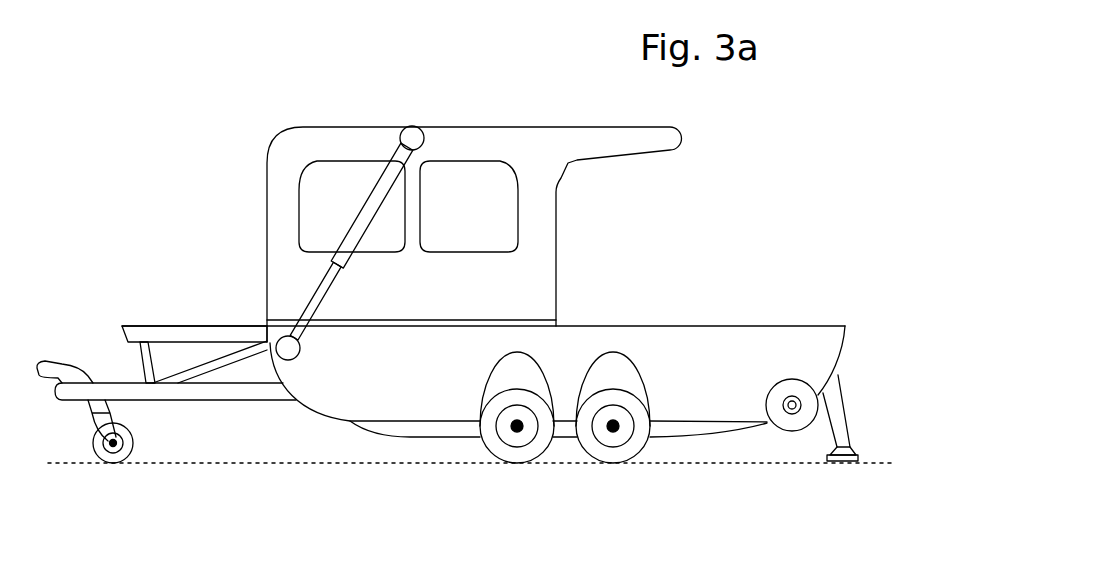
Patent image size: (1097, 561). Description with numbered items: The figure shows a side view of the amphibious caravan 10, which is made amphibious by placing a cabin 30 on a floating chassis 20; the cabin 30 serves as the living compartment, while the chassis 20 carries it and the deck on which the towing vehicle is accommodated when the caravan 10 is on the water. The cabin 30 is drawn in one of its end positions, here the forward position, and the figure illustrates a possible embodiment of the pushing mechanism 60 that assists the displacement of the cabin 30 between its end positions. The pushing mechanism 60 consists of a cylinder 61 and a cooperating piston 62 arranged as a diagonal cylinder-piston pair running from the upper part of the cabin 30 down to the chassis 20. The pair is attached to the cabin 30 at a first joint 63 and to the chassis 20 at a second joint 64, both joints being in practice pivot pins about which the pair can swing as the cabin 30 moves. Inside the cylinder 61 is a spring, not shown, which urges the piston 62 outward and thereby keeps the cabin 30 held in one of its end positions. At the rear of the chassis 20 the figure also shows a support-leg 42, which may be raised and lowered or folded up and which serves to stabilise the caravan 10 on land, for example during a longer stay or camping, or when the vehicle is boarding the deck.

The caravan 10 is at (662, 265).
The chassis 20 is at (483, 394).
The cabin 30 is at (474, 234).
The support-leg 42 is at (836, 418).
The pushing mechanism 60 is at (430, 107).
The cylinder 61 is at (360, 223).
The piston 62 is at (320, 286).
The first joint 63 is at (412, 138).
The second joint 64 is at (293, 353).